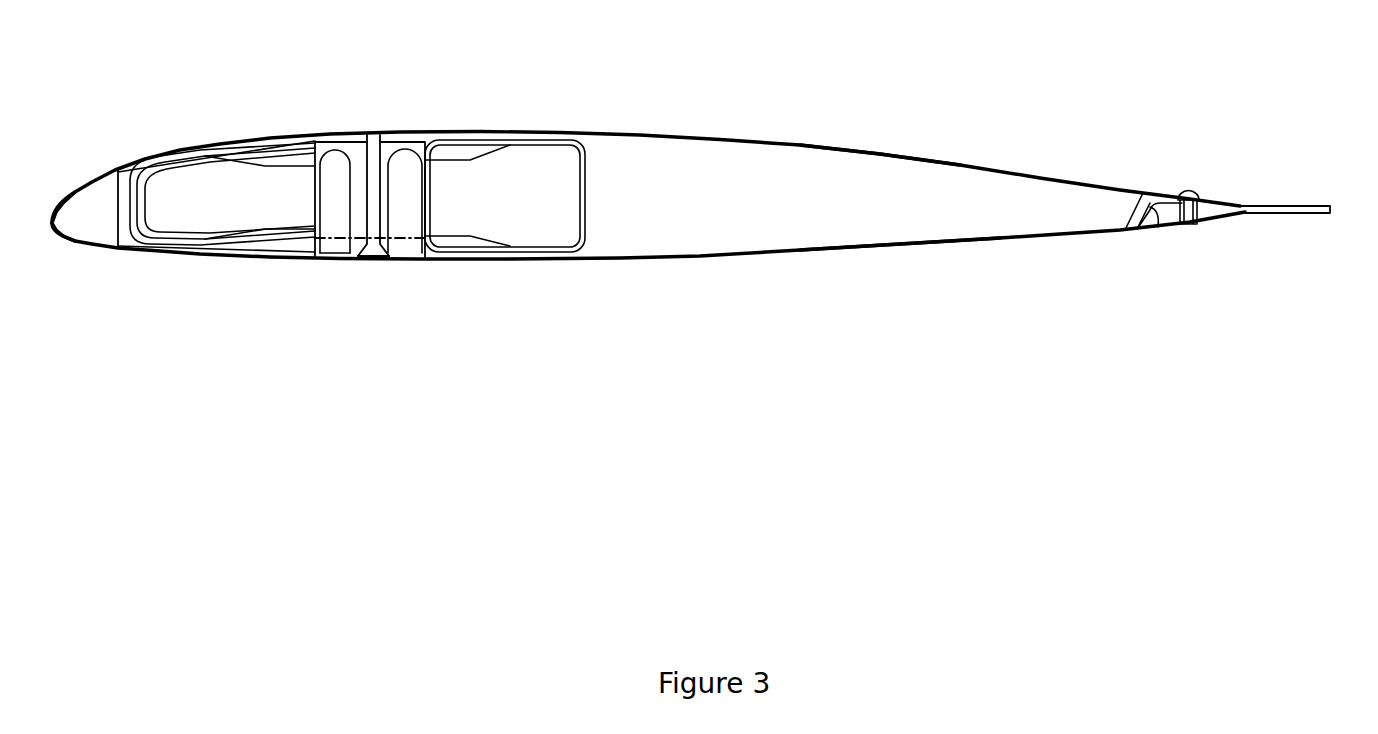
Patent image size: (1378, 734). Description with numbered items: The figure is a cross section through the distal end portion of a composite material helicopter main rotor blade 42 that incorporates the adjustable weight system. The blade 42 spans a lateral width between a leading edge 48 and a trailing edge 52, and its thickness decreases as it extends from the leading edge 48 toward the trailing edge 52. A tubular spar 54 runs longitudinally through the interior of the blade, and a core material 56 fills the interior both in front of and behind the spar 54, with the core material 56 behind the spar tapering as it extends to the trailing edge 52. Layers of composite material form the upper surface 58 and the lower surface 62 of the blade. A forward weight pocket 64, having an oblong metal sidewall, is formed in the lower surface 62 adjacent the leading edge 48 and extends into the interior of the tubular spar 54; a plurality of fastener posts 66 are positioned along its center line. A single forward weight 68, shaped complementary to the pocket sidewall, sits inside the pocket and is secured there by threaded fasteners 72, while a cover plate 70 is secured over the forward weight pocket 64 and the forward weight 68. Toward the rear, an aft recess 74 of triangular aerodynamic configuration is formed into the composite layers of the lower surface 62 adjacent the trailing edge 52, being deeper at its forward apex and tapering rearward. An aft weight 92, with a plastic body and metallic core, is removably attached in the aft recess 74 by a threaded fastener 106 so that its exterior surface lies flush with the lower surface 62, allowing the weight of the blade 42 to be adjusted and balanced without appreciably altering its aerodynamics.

The rotor blade 42 is at (643, 133).
The leading edge 48 is at (56, 213).
The trailing edge 52 is at (1332, 211).
The tubular spar 54 is at (126, 186).
The core material 56 is at (110, 240).
The upper surface 58 is at (860, 150).
The lower surface 62 is at (896, 252).
The forward weight pocket 64 is at (320, 204).
The fastener posts 66 is at (388, 183).
The forward weight 68 is at (323, 260).
The cover plate 70 is at (337, 263).
The threaded fasteners 72 is at (361, 263).
The aft recess 74 is at (1147, 231).
The aft weight 92 is at (1158, 232).
The threaded fastener 106 is at (1197, 190).